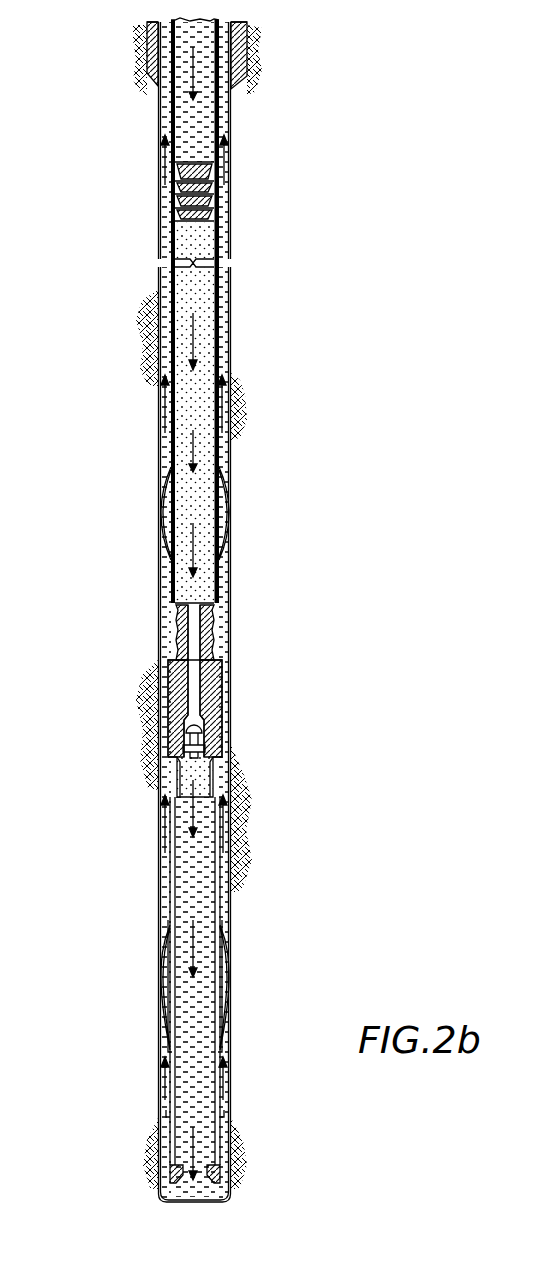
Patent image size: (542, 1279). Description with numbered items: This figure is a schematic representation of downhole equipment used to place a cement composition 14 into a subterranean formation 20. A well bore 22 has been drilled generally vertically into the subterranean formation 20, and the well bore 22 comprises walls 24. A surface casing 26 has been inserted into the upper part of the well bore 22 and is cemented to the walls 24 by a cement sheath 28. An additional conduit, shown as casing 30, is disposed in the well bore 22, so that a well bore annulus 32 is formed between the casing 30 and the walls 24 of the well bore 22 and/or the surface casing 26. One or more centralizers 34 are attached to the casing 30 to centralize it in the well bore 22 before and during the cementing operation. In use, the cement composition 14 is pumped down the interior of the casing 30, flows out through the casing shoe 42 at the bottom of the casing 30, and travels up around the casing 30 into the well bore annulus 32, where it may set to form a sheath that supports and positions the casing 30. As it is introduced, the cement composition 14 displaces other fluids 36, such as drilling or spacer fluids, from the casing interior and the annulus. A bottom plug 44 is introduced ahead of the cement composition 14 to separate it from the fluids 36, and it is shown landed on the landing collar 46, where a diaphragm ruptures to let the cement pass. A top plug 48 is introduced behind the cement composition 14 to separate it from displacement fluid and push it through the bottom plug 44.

The cement composition 14 is at (192, 323).
The subterranean formation 20 is at (343, 614).
The well bore 22 is at (250, 484).
The walls 24 is at (228, 232).
The surface casing 26 is at (245, 42).
The cement sheath 28 is at (243, 86).
The casing 30 is at (216, 349).
The well bore annulus 32 is at (163, 438).
The centralizers 34 is at (162, 950).
The fluids 36 is at (192, 787).
The casing shoe 42 is at (163, 1133).
The bottom plug 44 is at (175, 620).
The landing collar 46 is at (170, 688).
The top plug 48 is at (173, 222).